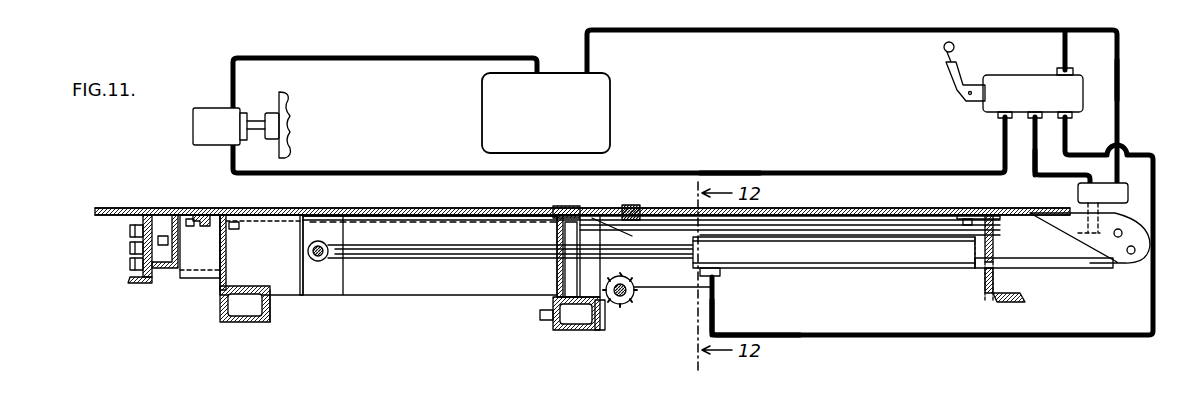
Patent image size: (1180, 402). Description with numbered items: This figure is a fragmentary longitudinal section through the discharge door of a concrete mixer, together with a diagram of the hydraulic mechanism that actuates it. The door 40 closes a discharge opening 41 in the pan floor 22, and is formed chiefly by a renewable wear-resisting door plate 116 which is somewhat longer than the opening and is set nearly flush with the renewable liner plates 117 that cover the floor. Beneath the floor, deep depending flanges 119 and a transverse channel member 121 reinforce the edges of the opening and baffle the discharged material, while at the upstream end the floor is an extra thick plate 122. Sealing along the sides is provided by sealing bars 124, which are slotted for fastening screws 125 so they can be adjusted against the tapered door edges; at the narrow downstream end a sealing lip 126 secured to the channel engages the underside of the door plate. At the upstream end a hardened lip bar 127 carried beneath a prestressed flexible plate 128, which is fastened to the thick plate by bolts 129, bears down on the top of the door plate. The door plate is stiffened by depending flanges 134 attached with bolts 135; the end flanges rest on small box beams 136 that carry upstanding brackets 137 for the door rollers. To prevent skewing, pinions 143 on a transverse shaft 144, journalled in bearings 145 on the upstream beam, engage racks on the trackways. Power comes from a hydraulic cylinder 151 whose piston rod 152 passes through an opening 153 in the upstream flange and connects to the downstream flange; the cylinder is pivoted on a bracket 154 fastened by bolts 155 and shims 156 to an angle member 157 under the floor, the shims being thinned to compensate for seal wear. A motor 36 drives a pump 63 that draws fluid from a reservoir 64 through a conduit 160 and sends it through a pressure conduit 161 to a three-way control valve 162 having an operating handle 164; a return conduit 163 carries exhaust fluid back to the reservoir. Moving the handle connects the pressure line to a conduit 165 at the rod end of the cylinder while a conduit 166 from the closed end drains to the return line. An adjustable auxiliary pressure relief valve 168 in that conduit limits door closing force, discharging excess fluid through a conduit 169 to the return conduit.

The floor 22 is at (112, 202).
The motor 36 is at (292, 136).
The door 40 is at (458, 205).
The discharge opening 41 is at (418, 210).
The pump 63 is at (193, 140).
The reservoir 64 is at (603, 133).
The door plate 116 is at (440, 225).
The liner plates 117 is at (124, 207).
The depending flanges 119 is at (200, 274).
The channel member 121 is at (163, 276).
The thick plate 122 is at (830, 219).
The sealing bars 124 is at (346, 212).
The fastening screws 125 is at (180, 211).
The sealing lip 126 is at (201, 212).
The lip bar 127 is at (556, 208).
The flexible plate 128 is at (606, 212).
The bolts 129 is at (636, 207).
The depending flanges 134 is at (226, 262).
The bolts 135 is at (242, 213).
The box beams 136 is at (266, 306).
The brackets 137 is at (269, 324).
The pinions 143 is at (624, 305).
The transverse shaft 144 is at (634, 296).
The bearings 145 is at (600, 332).
The hydraulic cylinder 151 is at (866, 270).
The piston rod 152 is at (650, 260).
The opening 153 is at (565, 240).
The bracket 154 is at (1098, 262).
The bolts 155 is at (1010, 303).
The shims 156 is at (978, 268).
The angle member 157 is at (986, 213).
The conduit 160 is at (354, 56).
The pressure conduit 161 is at (733, 172).
The control valve 162 is at (992, 104).
The return conduit 163 is at (866, 40).
The operating handle 164 is at (948, 66).
The conduit 165 is at (790, 342).
The conduit 166 is at (1057, 177).
The auxiliary pressure relief valve 168 is at (1101, 185).
The conduit 169 is at (1114, 70).